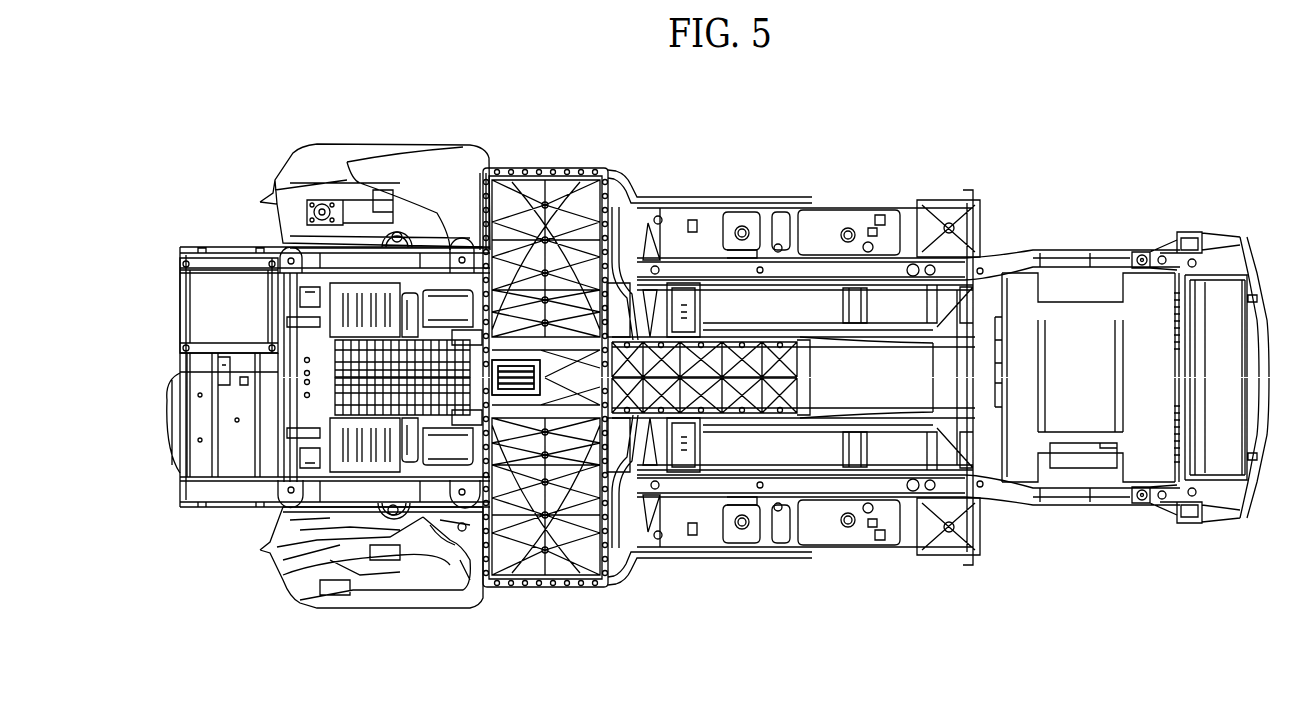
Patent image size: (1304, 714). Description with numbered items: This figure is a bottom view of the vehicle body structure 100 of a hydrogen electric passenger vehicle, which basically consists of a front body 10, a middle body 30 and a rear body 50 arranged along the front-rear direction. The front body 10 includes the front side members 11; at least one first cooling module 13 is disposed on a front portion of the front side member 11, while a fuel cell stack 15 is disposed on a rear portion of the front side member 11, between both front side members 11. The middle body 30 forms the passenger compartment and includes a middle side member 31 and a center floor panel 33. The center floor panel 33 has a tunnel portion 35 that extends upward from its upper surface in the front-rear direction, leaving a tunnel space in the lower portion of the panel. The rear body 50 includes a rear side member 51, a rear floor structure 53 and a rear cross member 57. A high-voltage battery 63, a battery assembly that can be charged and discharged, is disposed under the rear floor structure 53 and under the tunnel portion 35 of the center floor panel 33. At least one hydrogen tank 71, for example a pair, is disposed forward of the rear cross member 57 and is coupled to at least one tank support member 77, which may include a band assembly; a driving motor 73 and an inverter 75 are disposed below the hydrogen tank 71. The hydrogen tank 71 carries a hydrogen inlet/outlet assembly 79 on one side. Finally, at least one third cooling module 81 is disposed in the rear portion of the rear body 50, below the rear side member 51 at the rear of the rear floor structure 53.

The vehicle body structure 100 is at (705, 108).
The front body 10 is at (1112, 530).
The front side member 11 is at (1110, 258).
The first cooling module 13 is at (1250, 357).
The fuel cell stack 15 is at (1082, 371).
The middle body 30 is at (745, 575).
The middle side member 31 is at (860, 268).
The center floor panel 33 is at (818, 240).
The tunnel portion 35 is at (711, 331).
The rear body 50 is at (385, 616).
The rear side member 51 is at (215, 247).
The rear floor structure 53 is at (618, 185).
The rear cross member 57 is at (263, 407).
The high-voltage battery 63 is at (601, 381).
The hydrogen tank 71 is at (441, 307).
The driving motor 73 is at (357, 300).
The inverter 75 is at (406, 307).
The tank support member 77 is at (472, 339).
The hydrogen inlet/outlet assembly 79 is at (479, 331).
The third cooling module 81 is at (243, 297).